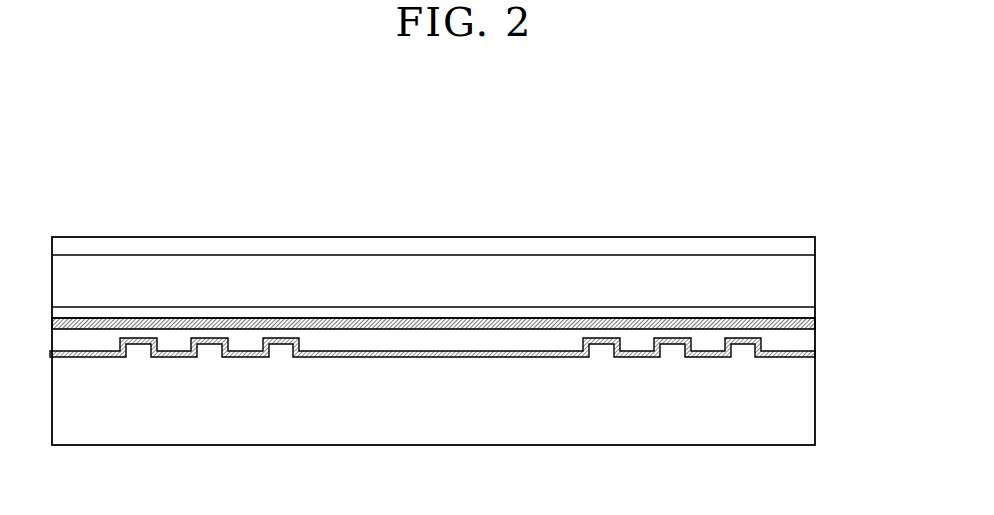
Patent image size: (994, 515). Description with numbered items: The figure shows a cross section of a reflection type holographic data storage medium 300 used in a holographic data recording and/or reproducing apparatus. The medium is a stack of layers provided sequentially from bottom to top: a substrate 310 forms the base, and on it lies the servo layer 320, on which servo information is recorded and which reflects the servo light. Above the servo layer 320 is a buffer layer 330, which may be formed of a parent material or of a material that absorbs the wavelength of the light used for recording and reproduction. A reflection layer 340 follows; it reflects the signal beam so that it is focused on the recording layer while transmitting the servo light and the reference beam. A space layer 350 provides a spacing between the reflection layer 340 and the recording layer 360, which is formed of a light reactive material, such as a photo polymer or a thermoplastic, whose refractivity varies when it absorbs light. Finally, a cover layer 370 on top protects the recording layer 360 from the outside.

The holographic data storage medium 300 is at (768, 205).
The substrate 310 is at (810, 409).
The servo layer 320 is at (817, 356).
The buffer layer 330 is at (810, 341).
The reflection layer 340 is at (817, 325).
The space layer 350 is at (810, 314).
The recording layer 360 is at (804, 277).
The cover layer 370 is at (808, 248).